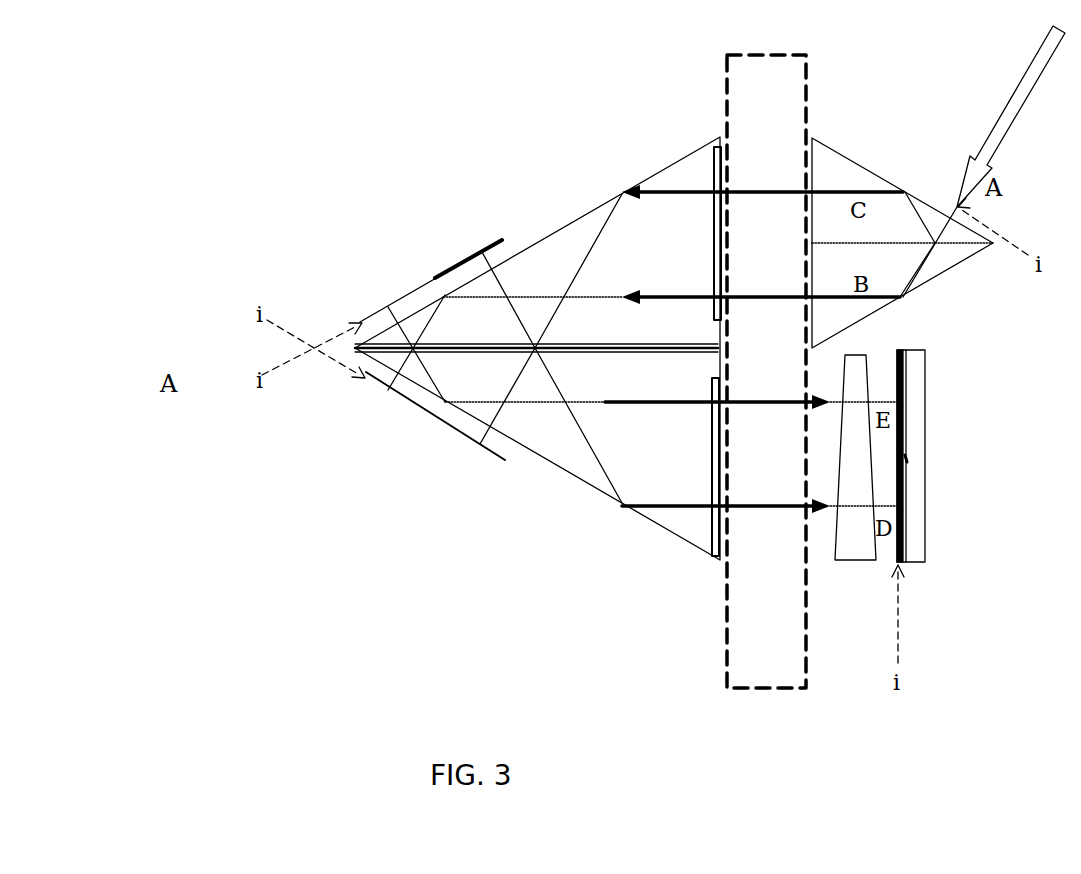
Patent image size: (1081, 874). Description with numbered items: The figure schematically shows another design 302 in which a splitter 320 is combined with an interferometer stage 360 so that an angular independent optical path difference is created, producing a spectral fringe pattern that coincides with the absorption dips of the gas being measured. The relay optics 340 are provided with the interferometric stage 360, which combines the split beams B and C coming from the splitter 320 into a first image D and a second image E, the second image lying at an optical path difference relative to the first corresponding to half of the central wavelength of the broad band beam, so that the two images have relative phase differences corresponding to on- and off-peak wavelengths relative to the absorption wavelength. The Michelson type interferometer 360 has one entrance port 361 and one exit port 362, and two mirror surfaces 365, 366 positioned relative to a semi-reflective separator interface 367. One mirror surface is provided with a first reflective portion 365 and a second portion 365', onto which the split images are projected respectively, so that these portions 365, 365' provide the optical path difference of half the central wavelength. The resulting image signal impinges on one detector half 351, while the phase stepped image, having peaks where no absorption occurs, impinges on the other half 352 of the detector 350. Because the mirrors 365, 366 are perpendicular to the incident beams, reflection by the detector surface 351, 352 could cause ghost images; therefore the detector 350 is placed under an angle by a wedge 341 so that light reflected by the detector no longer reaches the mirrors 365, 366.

The design 302 is at (470, 645).
The splitter 320 is at (862, 163).
The relay optics 340 is at (722, 78).
The wedge 341 is at (860, 360).
The detector 350 is at (928, 547).
The detector half 351 is at (908, 483).
The other half of the detector 352 is at (908, 407).
The interferometer stage 360 is at (553, 226).
The entrance port 361 is at (714, 182).
The exit port 362 is at (712, 510).
The mirror surface 365 is at (405, 281).
The second portion 365' is at (447, 231).
The mirror surface 366 is at (413, 404).
The semi-reflective separator interface 367 is at (615, 352).